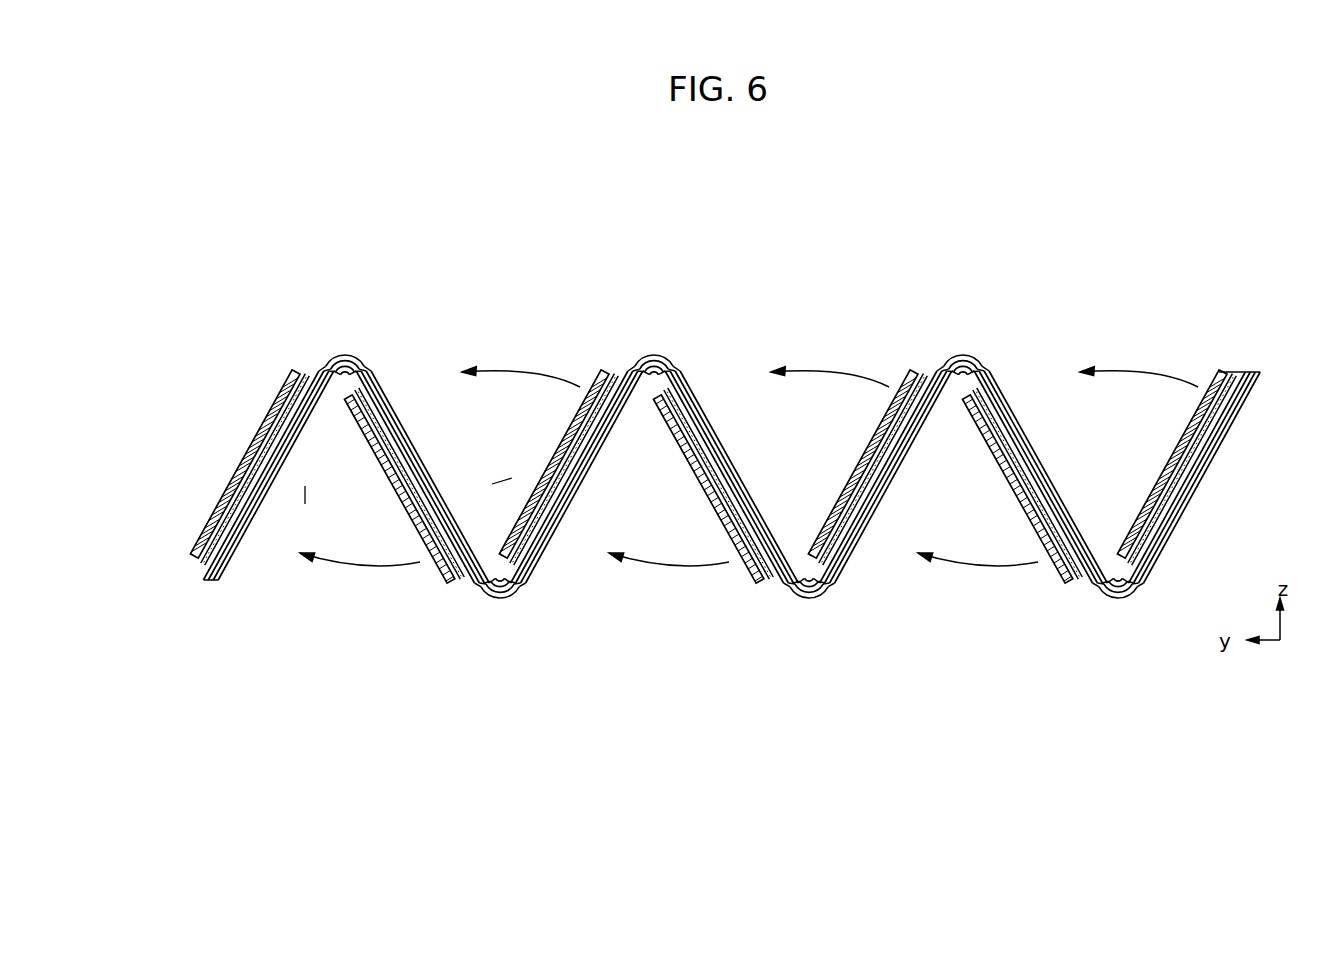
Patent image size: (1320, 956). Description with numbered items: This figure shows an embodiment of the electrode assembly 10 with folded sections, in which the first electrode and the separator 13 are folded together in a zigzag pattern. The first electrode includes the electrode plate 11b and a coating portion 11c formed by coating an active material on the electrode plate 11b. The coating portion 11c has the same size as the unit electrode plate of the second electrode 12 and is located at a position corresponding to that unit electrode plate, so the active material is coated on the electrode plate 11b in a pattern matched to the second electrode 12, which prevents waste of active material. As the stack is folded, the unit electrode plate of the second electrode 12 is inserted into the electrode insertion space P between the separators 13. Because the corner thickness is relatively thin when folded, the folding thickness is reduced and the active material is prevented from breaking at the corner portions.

The electrode assembly 10 is at (772, 236).
The electrode plate 11b is at (357, 355).
The coating portion 11c is at (408, 440).
The second electrode 12 is at (268, 432).
The separator 13 is at (336, 356).
The electrode insertion space P is at (305, 494).